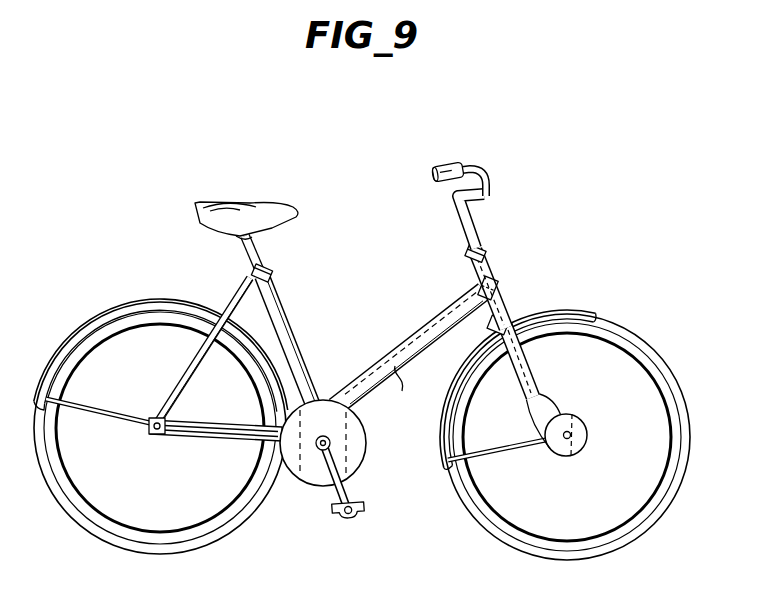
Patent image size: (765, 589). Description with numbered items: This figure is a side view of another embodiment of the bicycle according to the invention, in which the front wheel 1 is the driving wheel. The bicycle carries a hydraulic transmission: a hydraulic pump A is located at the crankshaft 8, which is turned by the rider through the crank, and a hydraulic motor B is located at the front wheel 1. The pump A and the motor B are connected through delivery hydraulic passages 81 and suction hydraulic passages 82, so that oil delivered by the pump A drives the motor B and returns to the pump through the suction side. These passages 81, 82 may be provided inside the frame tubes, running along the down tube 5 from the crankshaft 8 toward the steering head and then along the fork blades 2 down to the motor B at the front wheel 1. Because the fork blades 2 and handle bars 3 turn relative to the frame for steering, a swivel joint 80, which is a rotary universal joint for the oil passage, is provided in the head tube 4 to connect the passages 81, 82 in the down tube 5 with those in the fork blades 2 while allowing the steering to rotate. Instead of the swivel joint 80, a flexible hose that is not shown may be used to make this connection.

The front wheel 1 is at (688, 465).
The fork blades 2 is at (524, 358).
The handle bars 3 is at (481, 166).
The head tube 4 is at (488, 263).
The down tube 5 is at (434, 313).
The crankshaft 8 is at (333, 447).
The swivel joint 80 is at (497, 290).
The delivery hydraulic passages 81 is at (387, 358).
The suction hydraulic passages 82 is at (520, 383).
The hydraulic pump A is at (300, 491).
The hydraulic motor B is at (573, 435).